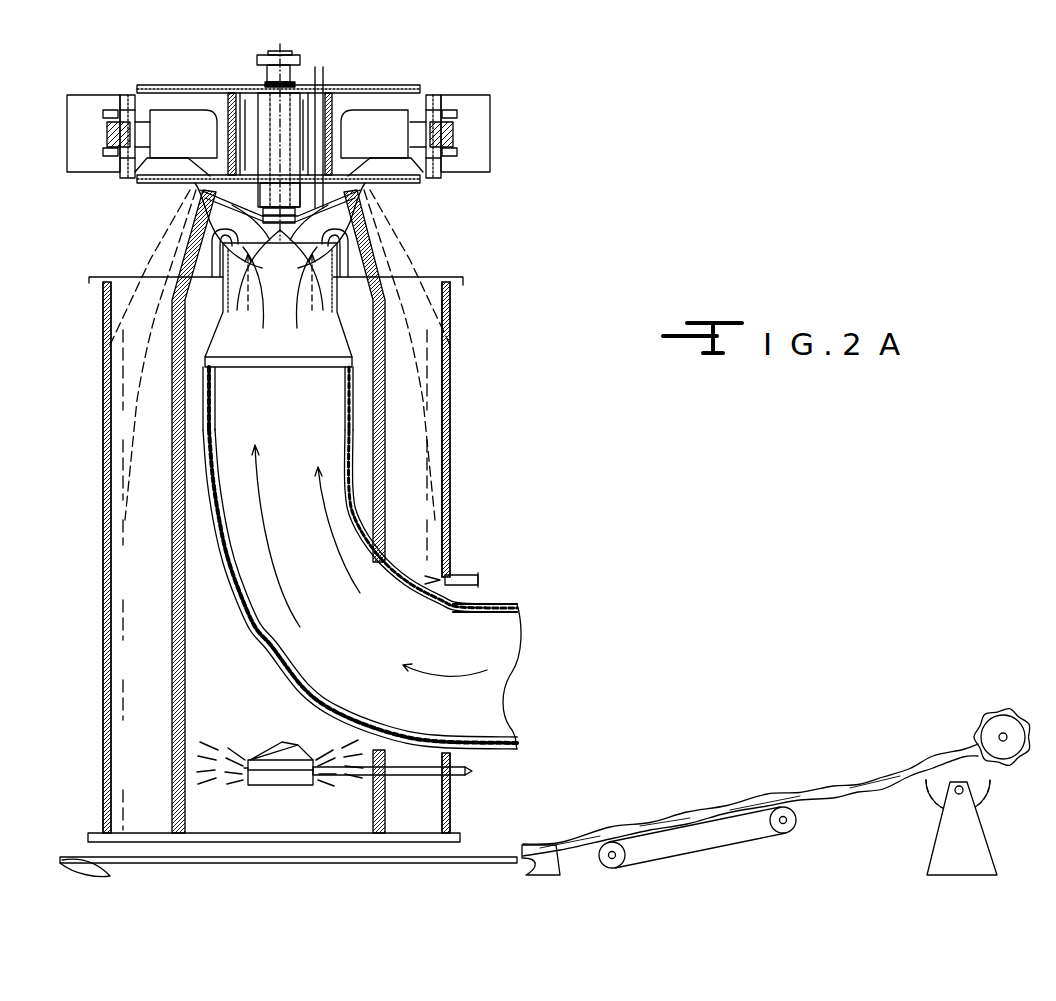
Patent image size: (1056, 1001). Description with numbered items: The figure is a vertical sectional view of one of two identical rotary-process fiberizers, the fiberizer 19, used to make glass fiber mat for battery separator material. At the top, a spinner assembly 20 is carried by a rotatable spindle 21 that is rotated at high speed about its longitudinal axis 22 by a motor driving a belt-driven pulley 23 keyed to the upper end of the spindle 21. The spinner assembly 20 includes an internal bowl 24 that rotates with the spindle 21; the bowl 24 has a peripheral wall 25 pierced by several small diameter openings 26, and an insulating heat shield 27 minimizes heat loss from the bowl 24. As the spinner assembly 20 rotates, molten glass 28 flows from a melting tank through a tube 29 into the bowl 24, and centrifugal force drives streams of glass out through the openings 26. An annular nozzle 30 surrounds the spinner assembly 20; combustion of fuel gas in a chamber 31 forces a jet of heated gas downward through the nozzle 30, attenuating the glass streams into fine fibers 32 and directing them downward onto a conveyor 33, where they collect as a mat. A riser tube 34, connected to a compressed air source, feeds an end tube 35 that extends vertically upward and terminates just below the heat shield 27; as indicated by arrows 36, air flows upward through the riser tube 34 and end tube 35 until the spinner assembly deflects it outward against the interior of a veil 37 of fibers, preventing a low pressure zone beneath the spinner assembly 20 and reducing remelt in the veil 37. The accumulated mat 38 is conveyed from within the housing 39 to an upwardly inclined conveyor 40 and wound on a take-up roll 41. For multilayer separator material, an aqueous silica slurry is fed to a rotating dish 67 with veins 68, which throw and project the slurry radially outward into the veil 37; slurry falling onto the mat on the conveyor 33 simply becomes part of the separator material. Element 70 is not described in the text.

The fiberizer 19 is at (450, 445).
The spinner assembly 20 is at (293, 225).
The rotatable spindle 21 is at (270, 80).
The longitudinal axis 22 is at (277, 140).
The belt-driven pulley 23 is at (297, 62).
The internal bowl 24 is at (247, 200).
The peripheral wall 25 is at (205, 200).
The small diameter openings 26 is at (207, 194).
The insulating heat shield 27 is at (205, 217).
The molten glass 28 is at (322, 88).
The tube 29 is at (370, 93).
The annular nozzle 30 is at (343, 190).
The chamber 31 is at (388, 149).
The fine fibers 32 is at (392, 355).
The conveyor 33 is at (268, 857).
The riser tube 34 is at (270, 758).
The end tube 35 is at (203, 397).
The arrows 36 is at (260, 315).
The veil of fibers 37 is at (170, 578).
The mat 38 is at (548, 848).
The housing 39 is at (453, 473).
The upwardly inclined conveyor 40 is at (697, 823).
The take-up roll 41 is at (995, 712).
The rotating dish 67 is at (246, 776).
The veins 68 is at (297, 756).
The flame spray 70 is at (210, 745).